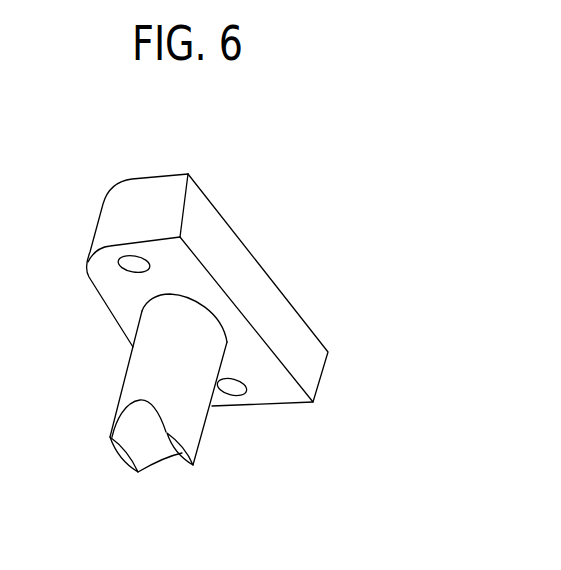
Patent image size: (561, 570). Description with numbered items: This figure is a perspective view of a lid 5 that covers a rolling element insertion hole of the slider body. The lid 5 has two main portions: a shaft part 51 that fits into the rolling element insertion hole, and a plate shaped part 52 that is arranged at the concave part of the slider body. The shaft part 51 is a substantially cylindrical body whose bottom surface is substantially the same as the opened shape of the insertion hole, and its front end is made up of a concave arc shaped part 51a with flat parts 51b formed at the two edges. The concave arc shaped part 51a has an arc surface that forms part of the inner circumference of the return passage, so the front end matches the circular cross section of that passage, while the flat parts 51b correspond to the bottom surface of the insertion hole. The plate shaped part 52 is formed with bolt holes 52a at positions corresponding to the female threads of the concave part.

The lid 5 is at (237, 197).
The plate shaped part 52 is at (247, 270).
The bolt holes 52a is at (137, 268).
The shaft part 51 is at (148, 364).
The concave arc shaped part 51a is at (149, 438).
The flat parts 51b is at (117, 457).